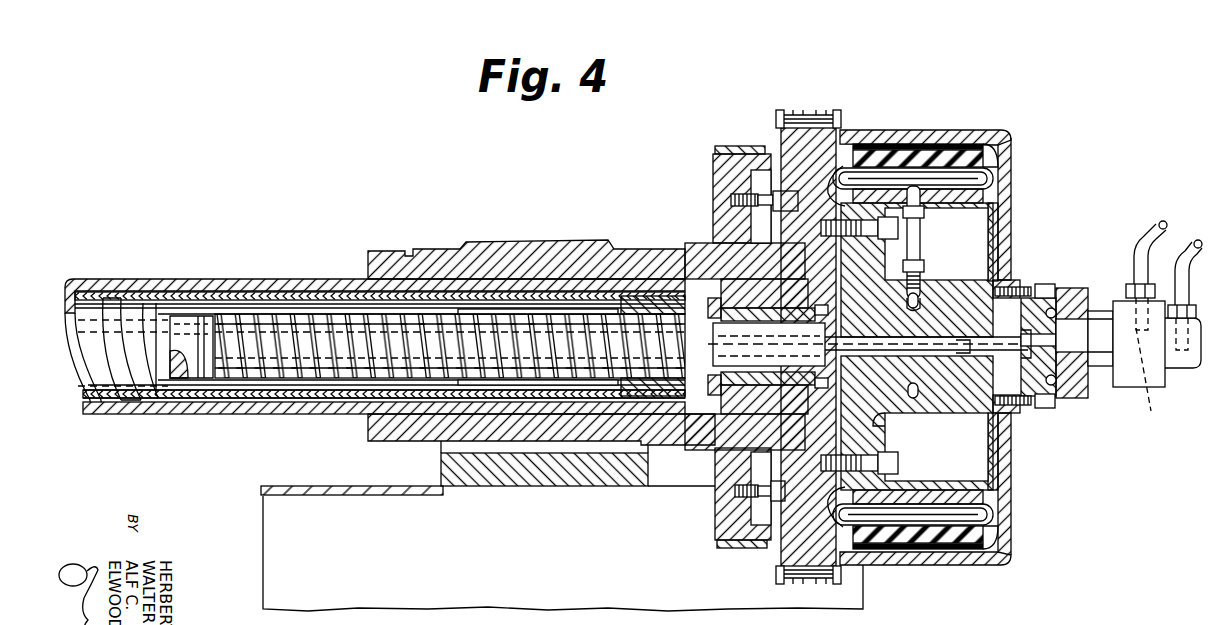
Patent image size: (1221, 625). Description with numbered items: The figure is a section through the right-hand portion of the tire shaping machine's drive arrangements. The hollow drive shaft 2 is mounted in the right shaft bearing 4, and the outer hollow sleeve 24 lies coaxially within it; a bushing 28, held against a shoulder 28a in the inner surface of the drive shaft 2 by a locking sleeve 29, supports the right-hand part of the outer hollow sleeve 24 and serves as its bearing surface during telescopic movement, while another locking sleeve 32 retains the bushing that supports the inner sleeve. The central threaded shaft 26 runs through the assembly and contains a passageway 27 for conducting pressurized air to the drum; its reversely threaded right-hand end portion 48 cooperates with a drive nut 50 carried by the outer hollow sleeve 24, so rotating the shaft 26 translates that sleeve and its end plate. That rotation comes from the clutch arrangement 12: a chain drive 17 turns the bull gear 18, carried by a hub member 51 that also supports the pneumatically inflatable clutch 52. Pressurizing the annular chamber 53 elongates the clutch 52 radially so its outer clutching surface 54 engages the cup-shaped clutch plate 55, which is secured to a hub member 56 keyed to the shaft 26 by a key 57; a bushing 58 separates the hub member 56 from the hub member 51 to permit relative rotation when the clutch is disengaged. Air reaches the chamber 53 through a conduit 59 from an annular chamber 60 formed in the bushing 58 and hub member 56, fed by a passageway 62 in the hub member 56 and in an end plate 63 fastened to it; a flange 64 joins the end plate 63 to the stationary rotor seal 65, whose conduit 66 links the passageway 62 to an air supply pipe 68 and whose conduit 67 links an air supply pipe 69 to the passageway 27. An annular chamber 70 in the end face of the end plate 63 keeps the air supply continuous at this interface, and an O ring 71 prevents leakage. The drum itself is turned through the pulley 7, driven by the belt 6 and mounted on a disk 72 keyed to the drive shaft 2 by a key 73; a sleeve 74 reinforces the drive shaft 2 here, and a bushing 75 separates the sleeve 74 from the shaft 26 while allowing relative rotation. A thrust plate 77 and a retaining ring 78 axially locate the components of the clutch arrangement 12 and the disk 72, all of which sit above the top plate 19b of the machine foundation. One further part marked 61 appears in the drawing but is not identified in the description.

The hollow drive shaft 2 is at (100, 272).
The right shaft bearing 4 is at (400, 246).
The belt 6 is at (735, 142).
The pulley 7 is at (724, 186).
The clutch arrangement 12 is at (1004, 110).
The chain drive 17 is at (832, 104).
The bull gear 18 is at (776, 128).
The top plate 19b is at (296, 477).
The outer hollow sleeve 24 is at (118, 292).
The central threaded shaft 26 is at (180, 318).
The passageway 27 is at (195, 318).
The bushing 28 is at (300, 292).
The shoulder 28a is at (255, 287).
The locking sleeve 29 is at (462, 300).
The locking sleeve 32 is at (236, 296).
The right-hand threaded end portion 48 is at (312, 368).
The drive nut 50 is at (620, 292).
The hub member 51 is at (872, 418).
The pneumatically inflatable clutch 52 is at (975, 147).
The annular chamber 53 is at (972, 173).
The outer clutching surface 54 is at (918, 142).
The cup-shaped clutch plate 55 is at (897, 128).
The hub member 56 is at (1007, 275).
The key 57 is at (862, 298).
The bushing 58 is at (968, 272).
The conduit 59 is at (913, 240).
The annular chamber 60 is at (906, 390).
The hub block 61 is at (936, 300).
The passageway 62 is at (1040, 315).
The end plate 63 is at (1030, 384).
The flange 64 is at (1068, 380).
The rotor seal 65 is at (1153, 374).
The conduit 66 is at (1093, 311).
The conduit 67 is at (1148, 398).
The air supply pipe 68 is at (1133, 240).
The air supply pipe 69 is at (1173, 250).
The annular chamber 70 is at (1050, 357).
The O ring 71 is at (1045, 322).
The disk 72 is at (740, 228).
The key 73 is at (727, 262).
The sleeve 74 is at (752, 370).
The bushing 75 is at (743, 425).
The thrust plate 77 is at (810, 392).
The retaining ring 78 is at (737, 392).